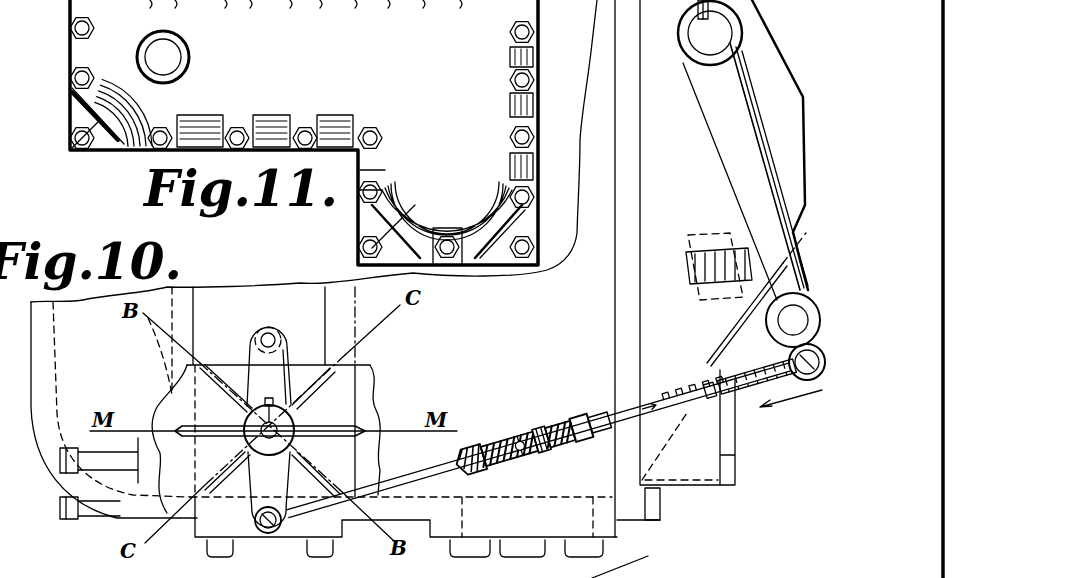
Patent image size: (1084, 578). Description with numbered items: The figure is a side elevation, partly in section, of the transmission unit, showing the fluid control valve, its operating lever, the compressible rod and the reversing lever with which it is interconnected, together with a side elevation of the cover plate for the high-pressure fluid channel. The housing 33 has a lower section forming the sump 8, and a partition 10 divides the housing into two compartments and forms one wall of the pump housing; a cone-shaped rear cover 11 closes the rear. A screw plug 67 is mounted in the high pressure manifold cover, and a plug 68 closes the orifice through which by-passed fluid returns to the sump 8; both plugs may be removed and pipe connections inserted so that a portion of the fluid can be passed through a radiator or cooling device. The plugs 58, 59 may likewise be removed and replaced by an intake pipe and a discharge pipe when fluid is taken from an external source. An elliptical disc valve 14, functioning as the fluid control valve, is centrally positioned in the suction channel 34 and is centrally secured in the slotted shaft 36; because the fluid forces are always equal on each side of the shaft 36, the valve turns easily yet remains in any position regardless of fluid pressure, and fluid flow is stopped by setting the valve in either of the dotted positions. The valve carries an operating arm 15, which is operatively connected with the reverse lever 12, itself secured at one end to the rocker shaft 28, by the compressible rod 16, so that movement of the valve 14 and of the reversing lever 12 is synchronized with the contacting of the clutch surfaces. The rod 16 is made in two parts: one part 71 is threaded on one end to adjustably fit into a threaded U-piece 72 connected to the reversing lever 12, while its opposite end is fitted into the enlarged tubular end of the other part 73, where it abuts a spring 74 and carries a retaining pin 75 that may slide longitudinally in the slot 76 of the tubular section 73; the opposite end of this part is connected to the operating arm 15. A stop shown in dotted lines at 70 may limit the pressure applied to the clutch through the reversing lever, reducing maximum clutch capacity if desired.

In FIG. 10, the sump 8 is at (384, 459).
In FIG. 10, the partition 10 is at (360, 346).
In FIG. 10, the rear cover 11 is at (782, 68).
In FIG. 10, the reverse lever 12 is at (742, 172).
In FIG. 10, the elliptical disc valve 14 is at (326, 430).
In FIG. 10, the operating arm 15 is at (250, 352).
In FIG. 10, the compressible rod 16 is at (539, 440).
In FIG. 10, the rocker shaft 28 is at (720, 28).
In FIG. 10, the housing 33 is at (670, 577).
In FIG. 10, the suction channel 34 is at (118, 523).
In FIG. 10, the slotted shaft 36 is at (272, 428).
In FIG. 10, the plug 58 is at (218, 552).
In FIG. 10, the plug 59 is at (540, 540).
In FIG. 11, the screw plug 67 is at (176, 54).
In FIG. 10, the plug 68 is at (728, 468).
In FIG. 10, the stop 70 is at (686, 263).
In FIG. 10, the rod part 71 is at (698, 392).
In FIG. 10, the threaded U-piece 72 is at (750, 398).
In FIG. 11, the tubular section 73 is at (304, 132).
In FIG. 10, the tubular section 73 is at (507, 435).
In FIG. 10, the spring 74 is at (522, 431).
In FIG. 10, the retaining pin 75 is at (580, 440).
In FIG. 10, the slot 76 is at (546, 432).